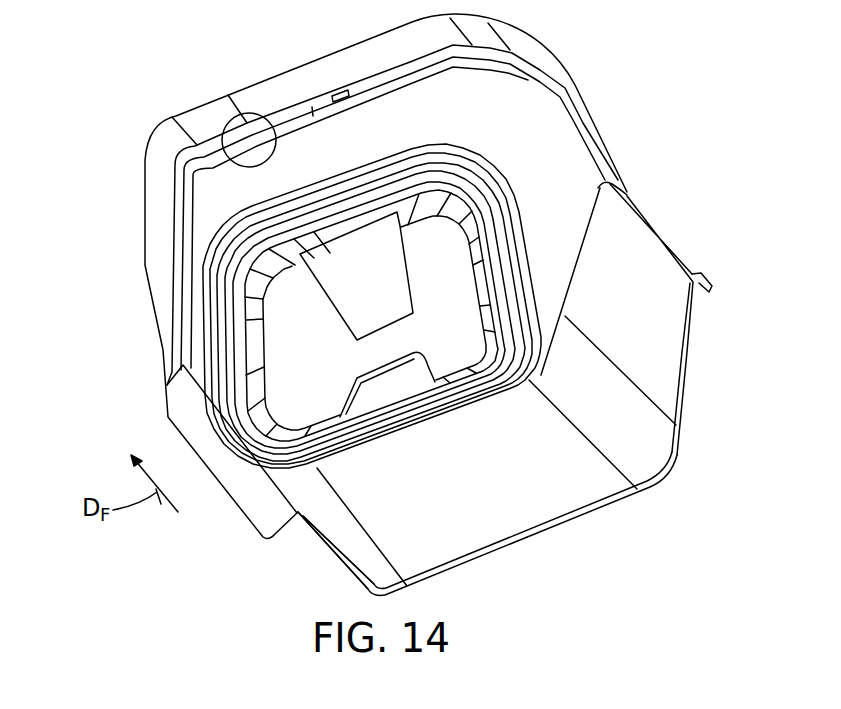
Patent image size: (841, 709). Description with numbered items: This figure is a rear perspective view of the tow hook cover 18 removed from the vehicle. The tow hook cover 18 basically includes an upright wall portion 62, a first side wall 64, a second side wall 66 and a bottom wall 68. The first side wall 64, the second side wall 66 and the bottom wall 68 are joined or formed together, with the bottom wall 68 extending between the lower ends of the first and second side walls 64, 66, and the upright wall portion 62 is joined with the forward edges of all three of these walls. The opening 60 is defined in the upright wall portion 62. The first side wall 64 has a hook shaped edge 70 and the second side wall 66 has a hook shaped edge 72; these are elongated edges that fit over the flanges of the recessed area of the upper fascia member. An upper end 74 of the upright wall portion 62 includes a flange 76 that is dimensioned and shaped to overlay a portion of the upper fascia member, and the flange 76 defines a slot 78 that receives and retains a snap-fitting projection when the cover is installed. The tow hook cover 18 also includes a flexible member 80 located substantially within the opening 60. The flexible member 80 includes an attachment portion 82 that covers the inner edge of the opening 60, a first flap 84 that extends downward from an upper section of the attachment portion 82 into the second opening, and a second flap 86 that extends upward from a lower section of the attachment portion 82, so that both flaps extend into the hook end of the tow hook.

The tow hook cover 18 is at (165, 80).
The opening 60 is at (250, 367).
The upright wall portion 62 is at (220, 212).
The first side wall 64 is at (313, 540).
The second side wall 66 is at (657, 330).
The bottom wall 68 is at (532, 490).
The hook shaped edge 70 is at (248, 484).
The hook shaped edge 72 is at (707, 279).
The upper end 74 is at (225, 162).
The flange 76 is at (290, 94).
The slot 78 is at (333, 98).
The flexible member 80 is at (205, 258).
The attachment portion 82 is at (222, 324).
The first flap 84 is at (383, 290).
The second flap 86 is at (398, 372).